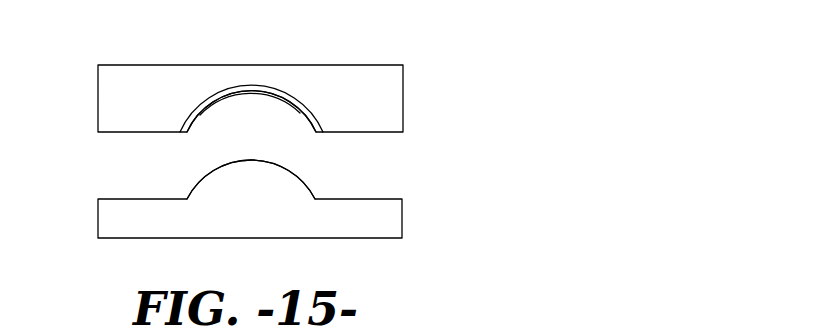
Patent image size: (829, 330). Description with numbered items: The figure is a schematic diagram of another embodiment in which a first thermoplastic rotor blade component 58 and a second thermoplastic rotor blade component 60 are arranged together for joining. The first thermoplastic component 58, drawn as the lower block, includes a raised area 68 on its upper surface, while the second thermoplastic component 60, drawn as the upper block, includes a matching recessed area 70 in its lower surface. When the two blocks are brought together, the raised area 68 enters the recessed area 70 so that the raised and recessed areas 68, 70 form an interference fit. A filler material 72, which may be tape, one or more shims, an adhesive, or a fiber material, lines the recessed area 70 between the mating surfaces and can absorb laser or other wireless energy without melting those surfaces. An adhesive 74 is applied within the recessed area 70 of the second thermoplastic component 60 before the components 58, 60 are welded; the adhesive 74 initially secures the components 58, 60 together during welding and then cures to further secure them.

The first thermoplastic component 58 is at (98, 218).
The second thermoplastic component 60 is at (403, 96).
The raised area 68 is at (303, 177).
The recessed area 70 is at (255, 115).
The filler material 72 is at (205, 108).
The adhesive 74 is at (217, 102).